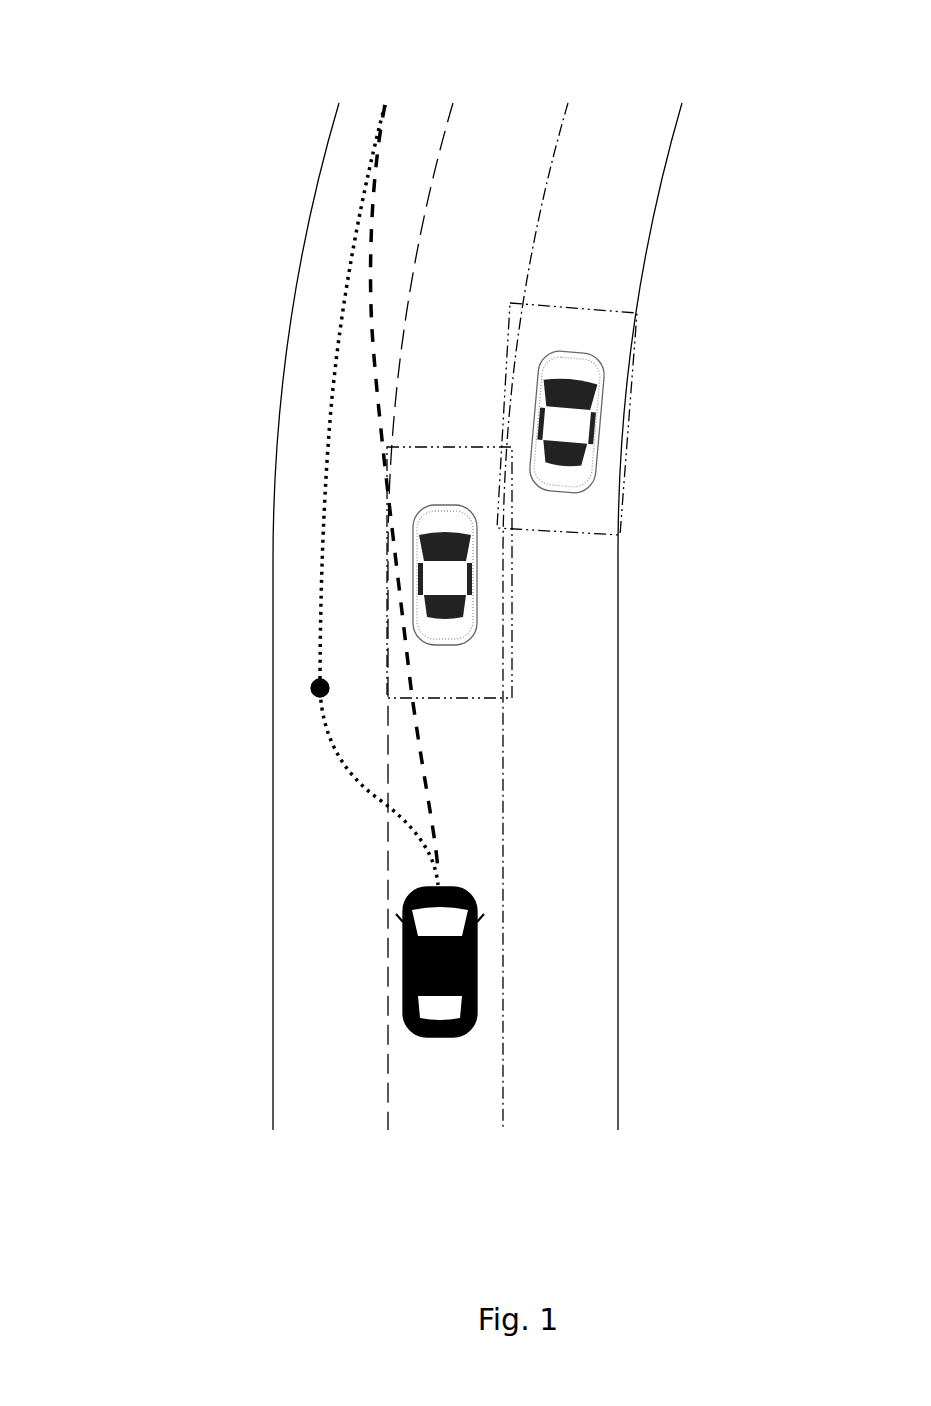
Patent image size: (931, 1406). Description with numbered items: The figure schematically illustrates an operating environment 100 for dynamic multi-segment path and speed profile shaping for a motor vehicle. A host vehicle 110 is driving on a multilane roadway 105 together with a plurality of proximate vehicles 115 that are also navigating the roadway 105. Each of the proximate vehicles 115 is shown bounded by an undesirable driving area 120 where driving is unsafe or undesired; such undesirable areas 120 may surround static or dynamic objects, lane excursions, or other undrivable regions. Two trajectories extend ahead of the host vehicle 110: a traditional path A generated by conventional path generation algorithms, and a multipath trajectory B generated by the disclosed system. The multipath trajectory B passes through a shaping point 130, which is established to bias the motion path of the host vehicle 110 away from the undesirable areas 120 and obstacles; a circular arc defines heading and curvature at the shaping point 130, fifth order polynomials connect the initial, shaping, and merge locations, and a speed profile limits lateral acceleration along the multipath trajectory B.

The operating environment 100 is at (489, 34).
The multilane roadway 105 is at (310, 166).
The host vehicle 110 is at (495, 969).
The proximate vehicles 115 is at (449, 482).
The undesirable driving areas 120 is at (525, 614).
The shaping point 130 is at (298, 694).
The traditional path A is at (443, 775).
The multipath trajectory B is at (305, 571).